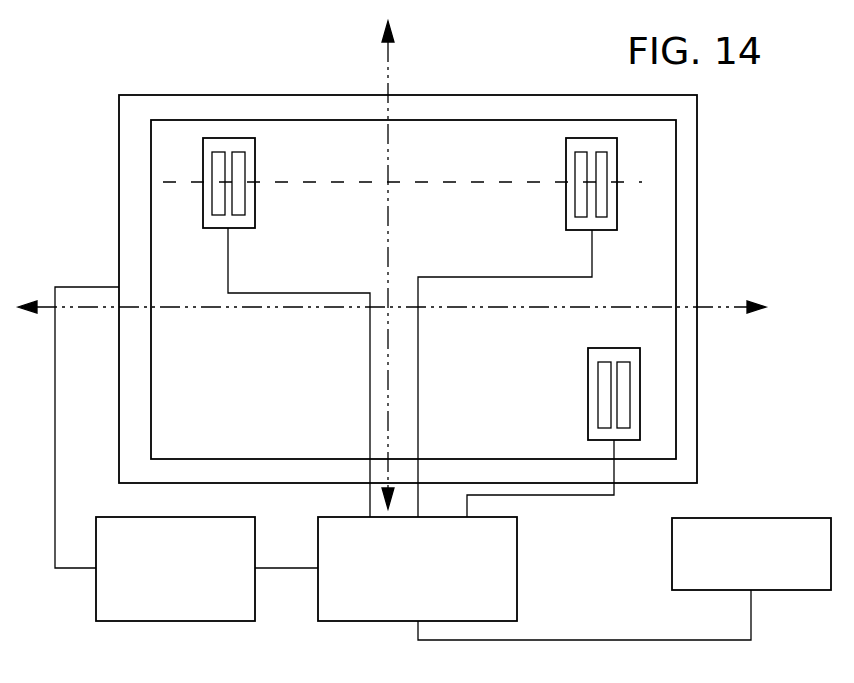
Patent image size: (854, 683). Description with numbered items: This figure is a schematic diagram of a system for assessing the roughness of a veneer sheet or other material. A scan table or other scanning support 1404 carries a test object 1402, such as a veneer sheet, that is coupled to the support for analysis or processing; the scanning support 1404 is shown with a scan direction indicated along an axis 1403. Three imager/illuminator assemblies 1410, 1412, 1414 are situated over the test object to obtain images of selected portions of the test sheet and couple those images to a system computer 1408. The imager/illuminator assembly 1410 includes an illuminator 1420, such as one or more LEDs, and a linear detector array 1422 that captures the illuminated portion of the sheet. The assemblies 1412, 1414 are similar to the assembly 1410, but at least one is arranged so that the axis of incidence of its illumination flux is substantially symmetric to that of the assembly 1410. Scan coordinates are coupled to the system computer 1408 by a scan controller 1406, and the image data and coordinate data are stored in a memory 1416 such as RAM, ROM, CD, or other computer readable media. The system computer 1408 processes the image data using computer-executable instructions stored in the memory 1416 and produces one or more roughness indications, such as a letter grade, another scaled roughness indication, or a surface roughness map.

The test object 1402 is at (282, 120).
The scan axis 1403 is at (710, 304).
The scanning support 1404 is at (119, 191).
The scan controller 1406 is at (173, 621).
The system computer 1408 is at (517, 543).
The imager/illuminator assembly 1410 is at (255, 161).
The imager/illuminator assembly 1412 is at (566, 182).
The imager/illuminator assembly 1414 is at (588, 370).
The memory 1416 is at (672, 552).
The illuminator 1420 is at (210, 199).
The linear detector array 1422 is at (245, 199).